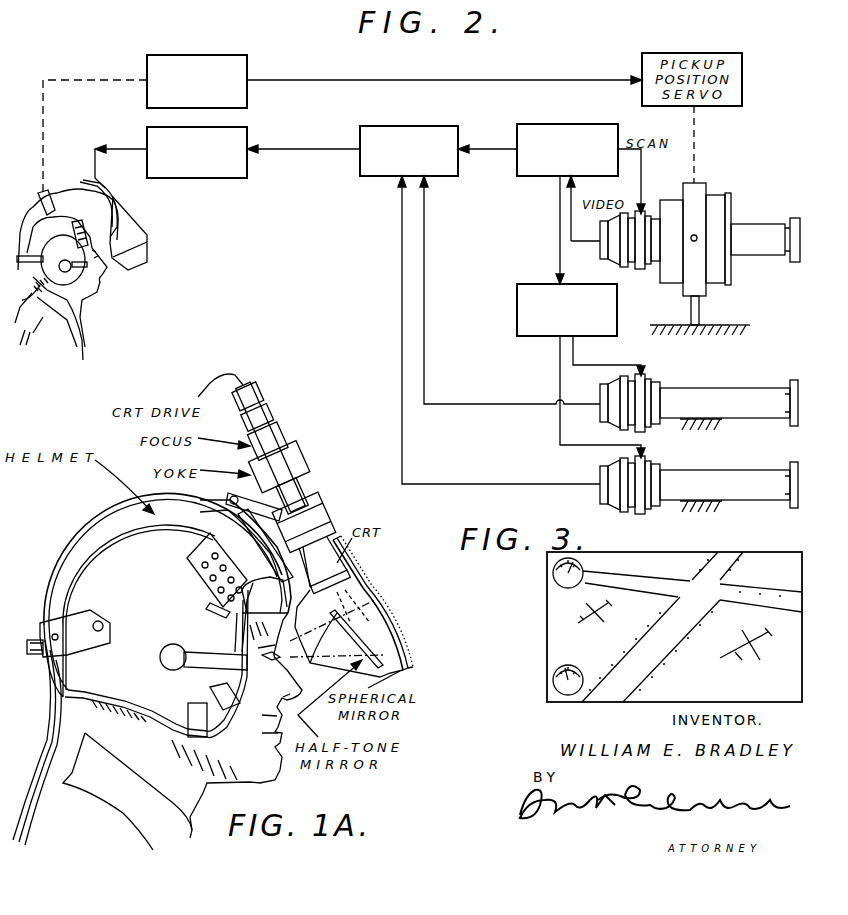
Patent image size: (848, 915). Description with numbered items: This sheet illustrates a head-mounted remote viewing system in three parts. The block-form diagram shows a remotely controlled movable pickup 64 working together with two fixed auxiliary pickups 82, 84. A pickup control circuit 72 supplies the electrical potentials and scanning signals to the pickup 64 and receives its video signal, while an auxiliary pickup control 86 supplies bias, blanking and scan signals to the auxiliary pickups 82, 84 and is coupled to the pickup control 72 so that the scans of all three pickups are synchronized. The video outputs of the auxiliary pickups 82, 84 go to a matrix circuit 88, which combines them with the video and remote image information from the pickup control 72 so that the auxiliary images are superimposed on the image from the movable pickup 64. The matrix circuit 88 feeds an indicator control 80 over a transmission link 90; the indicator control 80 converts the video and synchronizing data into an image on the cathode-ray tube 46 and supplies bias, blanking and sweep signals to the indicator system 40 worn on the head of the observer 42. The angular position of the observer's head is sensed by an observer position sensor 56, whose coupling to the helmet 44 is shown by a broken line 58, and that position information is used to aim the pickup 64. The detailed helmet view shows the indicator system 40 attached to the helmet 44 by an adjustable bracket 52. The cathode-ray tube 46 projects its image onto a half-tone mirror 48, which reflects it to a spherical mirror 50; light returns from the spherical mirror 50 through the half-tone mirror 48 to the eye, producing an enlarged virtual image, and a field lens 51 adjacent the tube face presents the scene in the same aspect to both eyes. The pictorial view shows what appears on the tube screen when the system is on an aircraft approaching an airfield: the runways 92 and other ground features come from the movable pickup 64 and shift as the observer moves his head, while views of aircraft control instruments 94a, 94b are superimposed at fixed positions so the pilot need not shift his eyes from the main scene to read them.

In FIG. 2, the indicator system 40 is at (150, 240).
In FIG. 1A, the indicator system 40 is at (388, 578).
In FIG. 1A, the observer 42 is at (182, 731).
In FIG. 2, the helmet 44 is at (60, 185).
In FIG. 1A, the helmet 44 is at (128, 545).
In FIG. 1A, the cathode-ray tube 46 is at (335, 563).
In FIG. 1A, the half-tone mirror 48 is at (336, 641).
In FIG. 1A, the spherical mirror 50 is at (400, 625).
In FIG. 1A, the field lens 51 is at (357, 570).
In FIG. 1A, the adjustable bracket 52 is at (245, 490).
In FIG. 2, the observer position sensor 56 is at (226, 56).
In FIG. 2, the coupling 58 is at (82, 72).
In FIG. 2, the pickup 64 is at (716, 287).
In FIG. 2, the pickup control circuit 72 is at (621, 123).
In FIG. 2, the indicator control 80 is at (226, 179).
In FIG. 2, the auxiliary pickup 82 is at (677, 398).
In FIG. 2, the auxiliary pickup 84 is at (692, 480).
In FIG. 2, the auxiliary pickup control 86 is at (535, 283).
In FIG. 2, the matrix circuit 88 is at (425, 127).
In FIG. 2, the transmission link 90 is at (310, 152).
In FIG. 3, the runways 92 is at (612, 688).
In FIG. 3, the aircraft control instrument 94a is at (553, 683).
In FIG. 3, the aircraft control instrument 94b is at (557, 587).